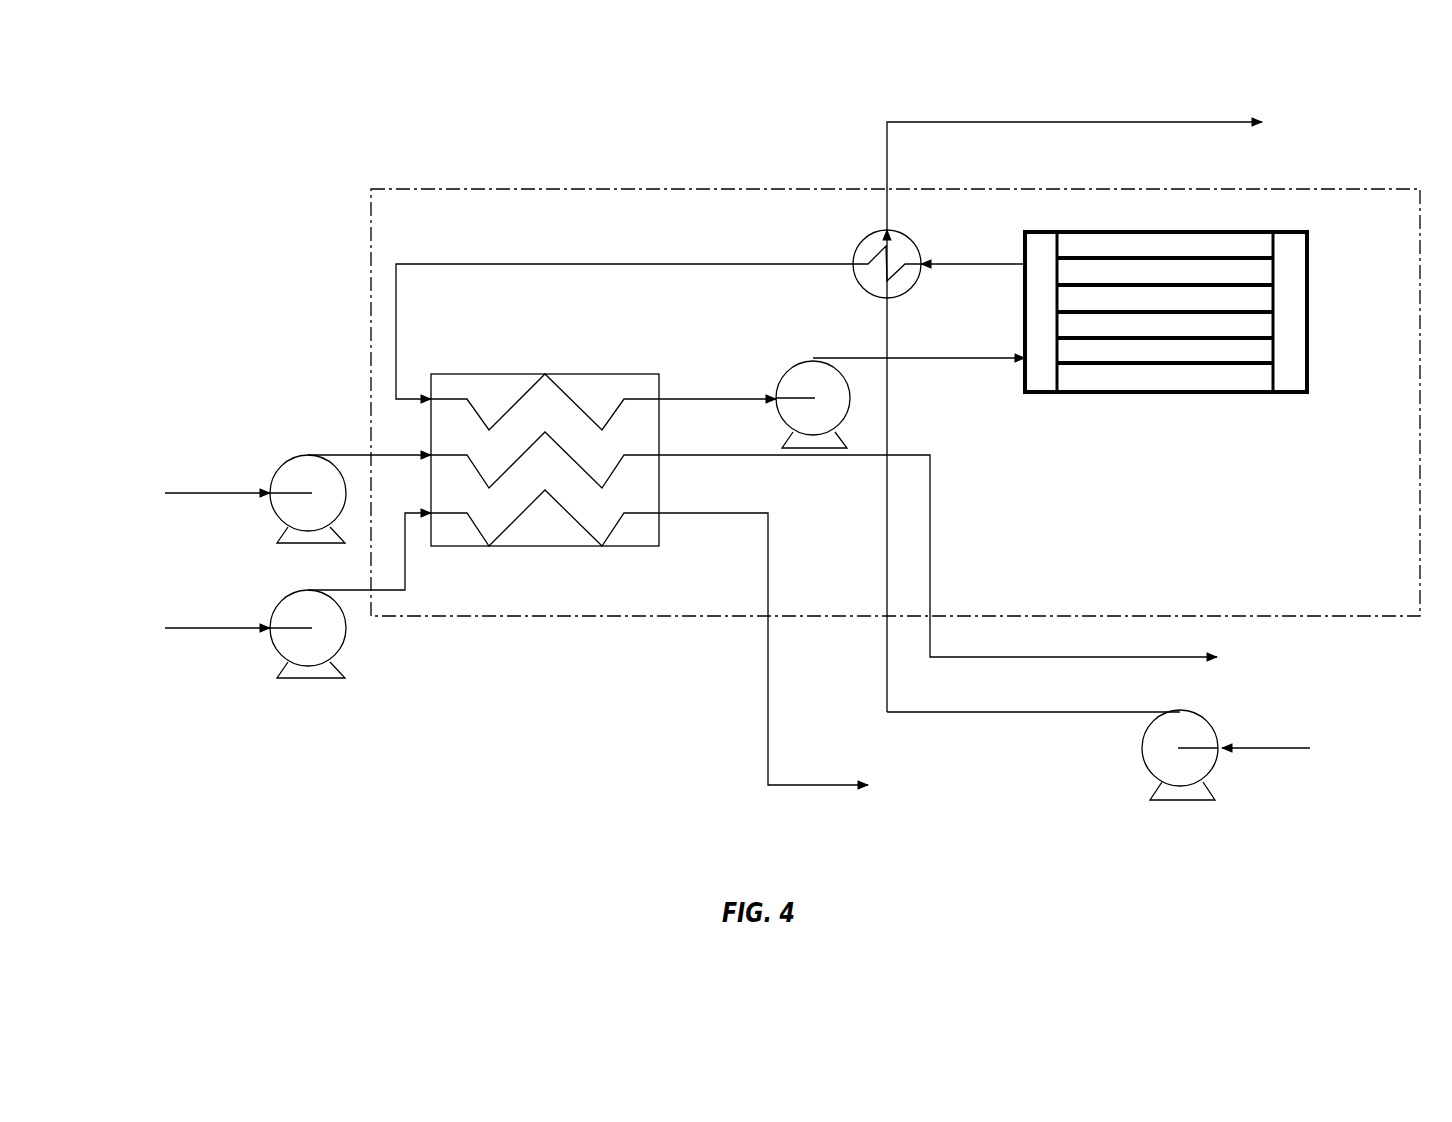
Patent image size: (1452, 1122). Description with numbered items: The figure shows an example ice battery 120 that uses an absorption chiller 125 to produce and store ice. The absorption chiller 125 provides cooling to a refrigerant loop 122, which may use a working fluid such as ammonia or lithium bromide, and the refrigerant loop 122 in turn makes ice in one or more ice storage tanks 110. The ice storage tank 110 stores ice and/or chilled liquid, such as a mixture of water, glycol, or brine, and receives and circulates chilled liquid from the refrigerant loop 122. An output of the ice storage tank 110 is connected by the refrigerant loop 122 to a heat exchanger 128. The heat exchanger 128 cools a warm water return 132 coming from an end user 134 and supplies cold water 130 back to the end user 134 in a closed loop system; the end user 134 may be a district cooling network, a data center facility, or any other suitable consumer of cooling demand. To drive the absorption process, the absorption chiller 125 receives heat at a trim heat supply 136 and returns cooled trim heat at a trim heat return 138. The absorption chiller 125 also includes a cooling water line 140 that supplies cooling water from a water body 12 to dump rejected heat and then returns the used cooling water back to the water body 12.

The water body 12 is at (1436, 693).
The ice storage tank 110 is at (1197, 230).
The ice battery 120 is at (712, 608).
The refrigerant loop 122 is at (647, 264).
The absorption chiller 125 is at (613, 367).
The heat exchanger 128 is at (857, 250).
The cold water 130 is at (1150, 142).
The warm water return 132 is at (1262, 770).
The end user 134 is at (1391, 835).
The trim heat supply 136 is at (195, 650).
The trim heat return 138 is at (795, 805).
The cooling water line 140 is at (1152, 678).